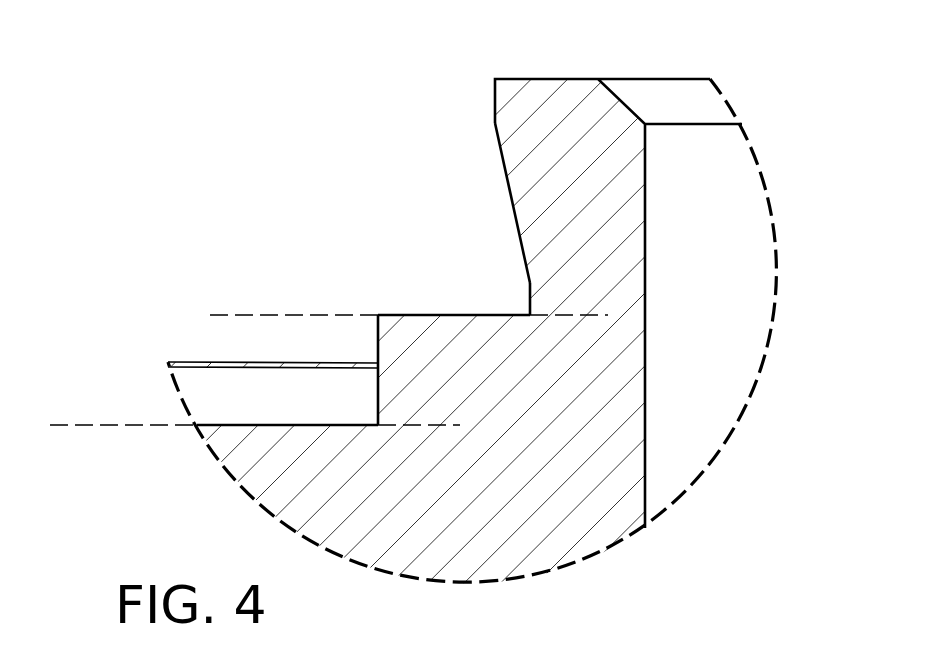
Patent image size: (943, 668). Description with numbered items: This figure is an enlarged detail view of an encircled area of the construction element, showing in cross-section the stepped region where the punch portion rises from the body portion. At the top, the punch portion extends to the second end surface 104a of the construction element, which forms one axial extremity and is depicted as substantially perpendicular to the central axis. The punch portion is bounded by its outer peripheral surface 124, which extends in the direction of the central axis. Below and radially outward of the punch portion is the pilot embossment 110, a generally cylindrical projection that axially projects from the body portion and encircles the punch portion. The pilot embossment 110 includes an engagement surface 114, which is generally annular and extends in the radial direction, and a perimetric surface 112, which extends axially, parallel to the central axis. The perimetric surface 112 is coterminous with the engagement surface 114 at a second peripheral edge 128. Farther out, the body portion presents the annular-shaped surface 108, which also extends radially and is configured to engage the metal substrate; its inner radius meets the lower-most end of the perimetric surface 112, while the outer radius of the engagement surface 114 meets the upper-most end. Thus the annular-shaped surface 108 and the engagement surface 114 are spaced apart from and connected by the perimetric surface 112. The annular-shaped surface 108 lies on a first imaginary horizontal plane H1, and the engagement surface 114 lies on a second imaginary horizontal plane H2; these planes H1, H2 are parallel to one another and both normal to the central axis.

The second end surface 104a is at (578, 79).
The outer peripheral surface of the punch portion 124 is at (481, 195).
The pilot embossment 110 is at (385, 259).
The engagement surface 114 is at (458, 315).
The second peripheral edge 128 is at (378, 313).
The perimetric surface 112 is at (378, 418).
The annular-shaped surface 108 is at (220, 425).
The second imaginary horizontal plane H2 is at (223, 315).
The first imaginary horizontal plane H1 is at (60, 427).